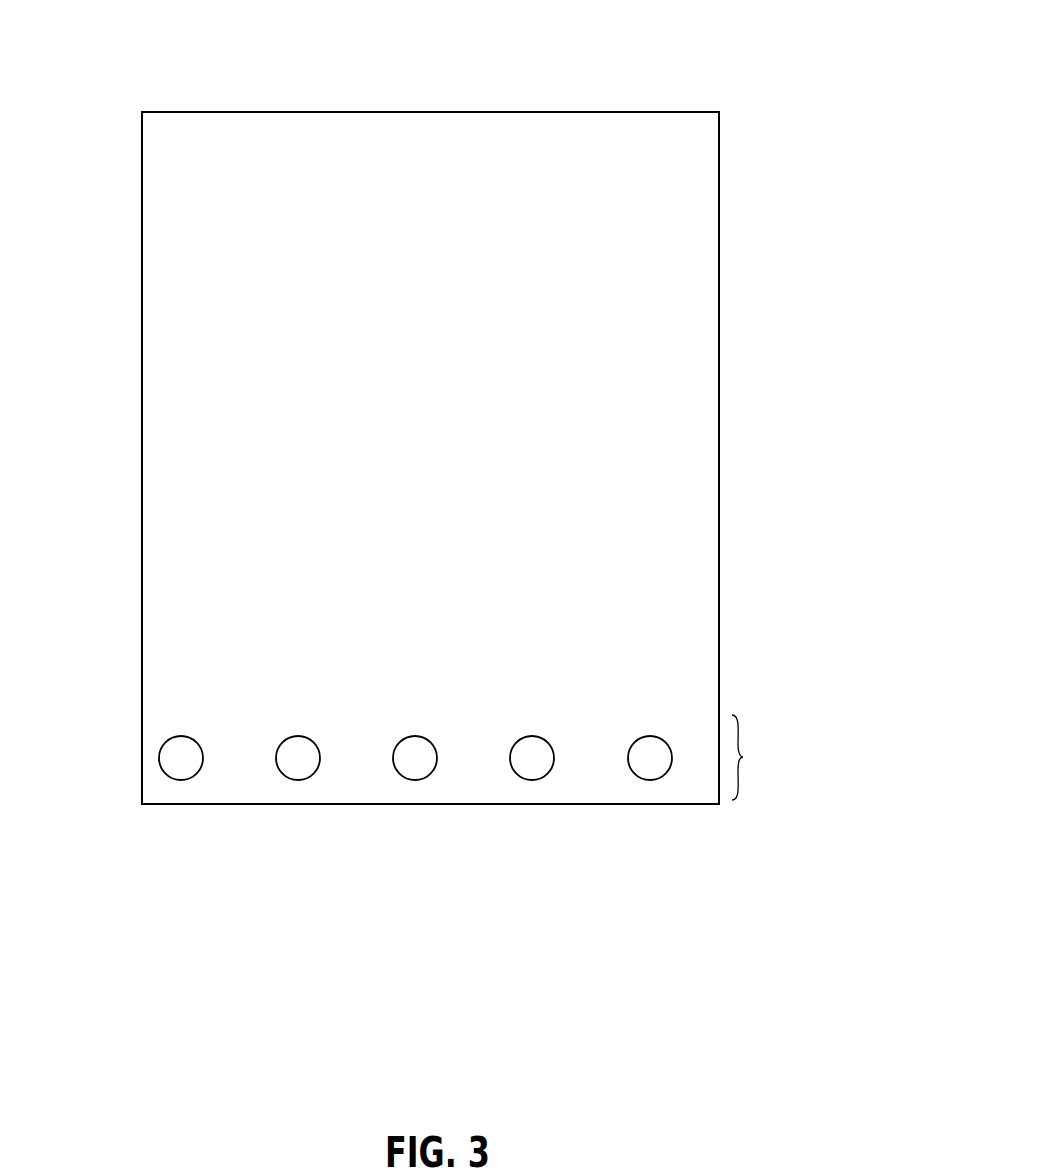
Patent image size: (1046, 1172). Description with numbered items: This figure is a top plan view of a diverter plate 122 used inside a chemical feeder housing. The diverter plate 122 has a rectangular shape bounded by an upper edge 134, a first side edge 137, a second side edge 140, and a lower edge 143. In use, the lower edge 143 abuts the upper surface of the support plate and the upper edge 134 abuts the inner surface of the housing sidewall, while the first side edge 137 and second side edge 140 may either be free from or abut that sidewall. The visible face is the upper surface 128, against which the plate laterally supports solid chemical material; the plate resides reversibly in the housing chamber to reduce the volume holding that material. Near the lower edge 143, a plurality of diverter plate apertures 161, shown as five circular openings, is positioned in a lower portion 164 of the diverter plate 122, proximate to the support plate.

The diverter plate 122 is at (720, 475).
The upper surface 128 is at (693, 265).
The upper edge 134 is at (472, 112).
The first side edge 137 is at (142, 405).
The second side edge 140 is at (720, 558).
The lower edge 143 is at (465, 804).
The diverter plate apertures 161 is at (181, 745).
The lower portion 164 is at (743, 757).